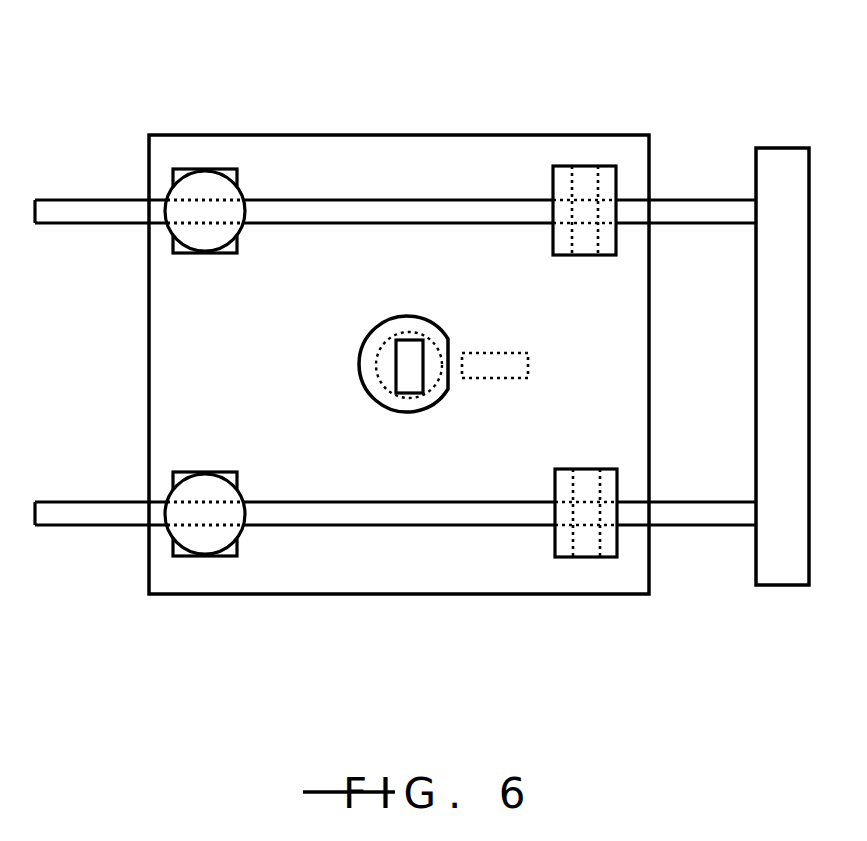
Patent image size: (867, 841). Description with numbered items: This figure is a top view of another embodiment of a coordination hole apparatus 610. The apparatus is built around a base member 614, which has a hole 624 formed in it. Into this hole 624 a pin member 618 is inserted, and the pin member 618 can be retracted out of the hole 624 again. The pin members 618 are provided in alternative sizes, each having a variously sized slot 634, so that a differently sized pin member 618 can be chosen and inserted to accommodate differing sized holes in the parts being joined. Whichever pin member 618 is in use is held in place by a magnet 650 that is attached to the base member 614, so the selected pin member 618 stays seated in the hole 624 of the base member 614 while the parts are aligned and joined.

The coordination hole apparatus 610 is at (560, 108).
The base member 614 is at (515, 557).
The pin member 618 is at (360, 371).
The hole 624 is at (418, 403).
The slot 634 is at (396, 372).
The magnet 650 is at (528, 370).